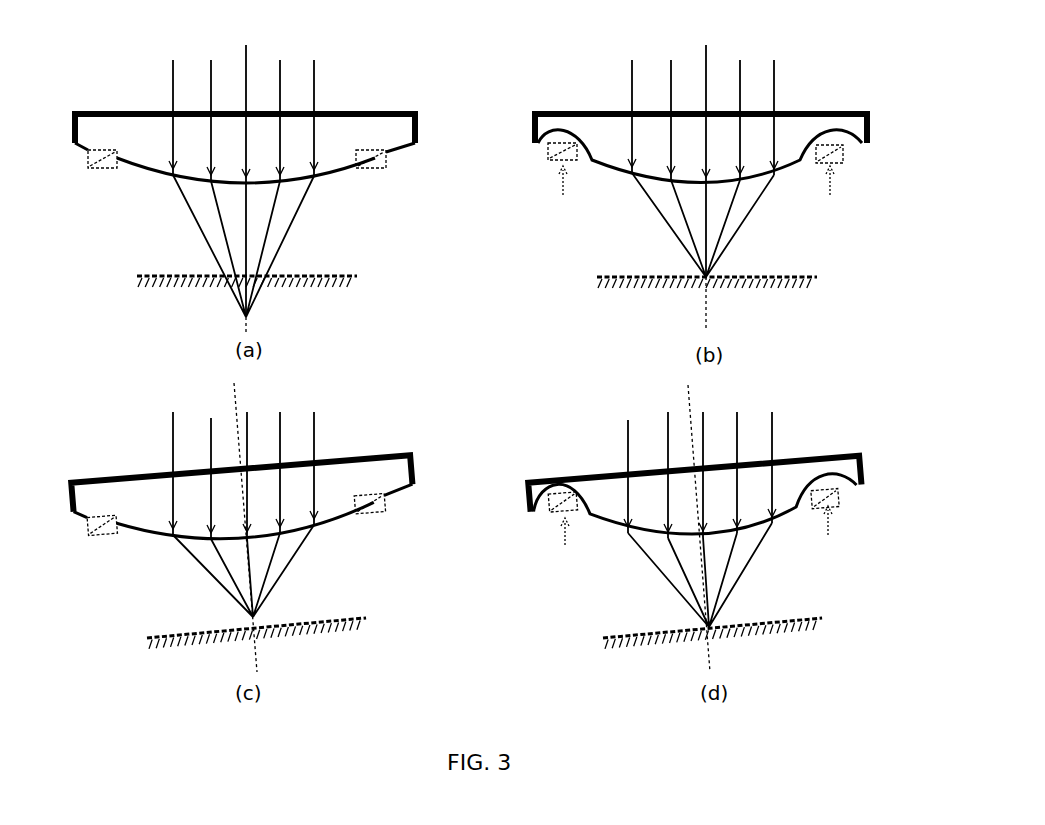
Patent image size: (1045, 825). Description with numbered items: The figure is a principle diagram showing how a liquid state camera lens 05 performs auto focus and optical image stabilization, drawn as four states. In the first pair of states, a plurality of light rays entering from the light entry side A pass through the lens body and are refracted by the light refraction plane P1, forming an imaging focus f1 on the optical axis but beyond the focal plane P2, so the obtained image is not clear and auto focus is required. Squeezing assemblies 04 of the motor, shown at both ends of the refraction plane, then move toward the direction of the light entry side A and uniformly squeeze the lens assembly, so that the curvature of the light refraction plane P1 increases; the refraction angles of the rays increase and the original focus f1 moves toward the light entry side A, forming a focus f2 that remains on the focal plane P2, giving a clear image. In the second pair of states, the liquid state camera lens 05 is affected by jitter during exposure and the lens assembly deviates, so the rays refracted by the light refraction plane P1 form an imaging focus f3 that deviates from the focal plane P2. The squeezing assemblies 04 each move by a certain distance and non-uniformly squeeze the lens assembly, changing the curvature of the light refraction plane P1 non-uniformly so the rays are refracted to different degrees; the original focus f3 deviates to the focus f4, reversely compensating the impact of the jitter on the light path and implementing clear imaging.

The squeezing assembly 04 is at (95, 169).
The liquid state camera lens 05 is at (378, 112).
The light refraction plane P1 is at (418, 143).
The focal plane P2 is at (352, 278).
The light entry side A is at (482, 336).
The imaging focus f1 is at (262, 316).
The focus f2 is at (725, 291).
The imaging focus f3 is at (257, 527).
The focus f4 is at (719, 528).